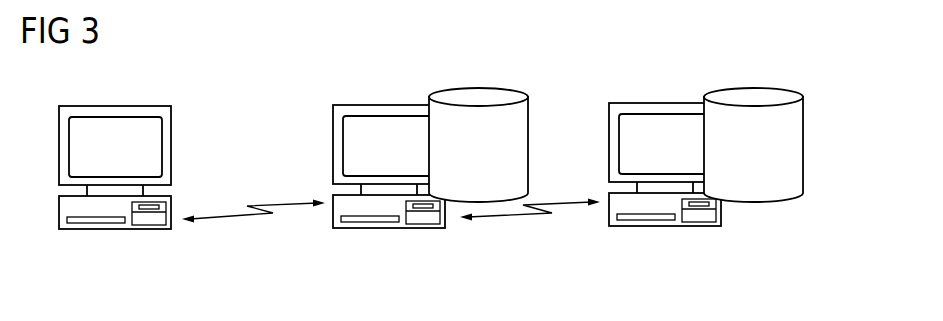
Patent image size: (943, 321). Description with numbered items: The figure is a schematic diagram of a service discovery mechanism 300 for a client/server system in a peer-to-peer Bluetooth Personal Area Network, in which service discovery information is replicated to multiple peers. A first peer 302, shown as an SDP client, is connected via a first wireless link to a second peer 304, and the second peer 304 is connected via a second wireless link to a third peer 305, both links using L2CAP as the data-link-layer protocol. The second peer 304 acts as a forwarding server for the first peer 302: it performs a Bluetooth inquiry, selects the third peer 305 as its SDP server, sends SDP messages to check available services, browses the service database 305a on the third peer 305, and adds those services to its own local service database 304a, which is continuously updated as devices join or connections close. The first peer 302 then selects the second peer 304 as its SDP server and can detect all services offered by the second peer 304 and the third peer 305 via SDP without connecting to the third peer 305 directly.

The service discovery system 300 is at (96, 91).
The first peer 302 is at (171, 147).
The second peer 304 is at (397, 105).
The service database 304a is at (480, 87).
The third peer 305 is at (672, 103).
The service database 305a is at (752, 87).